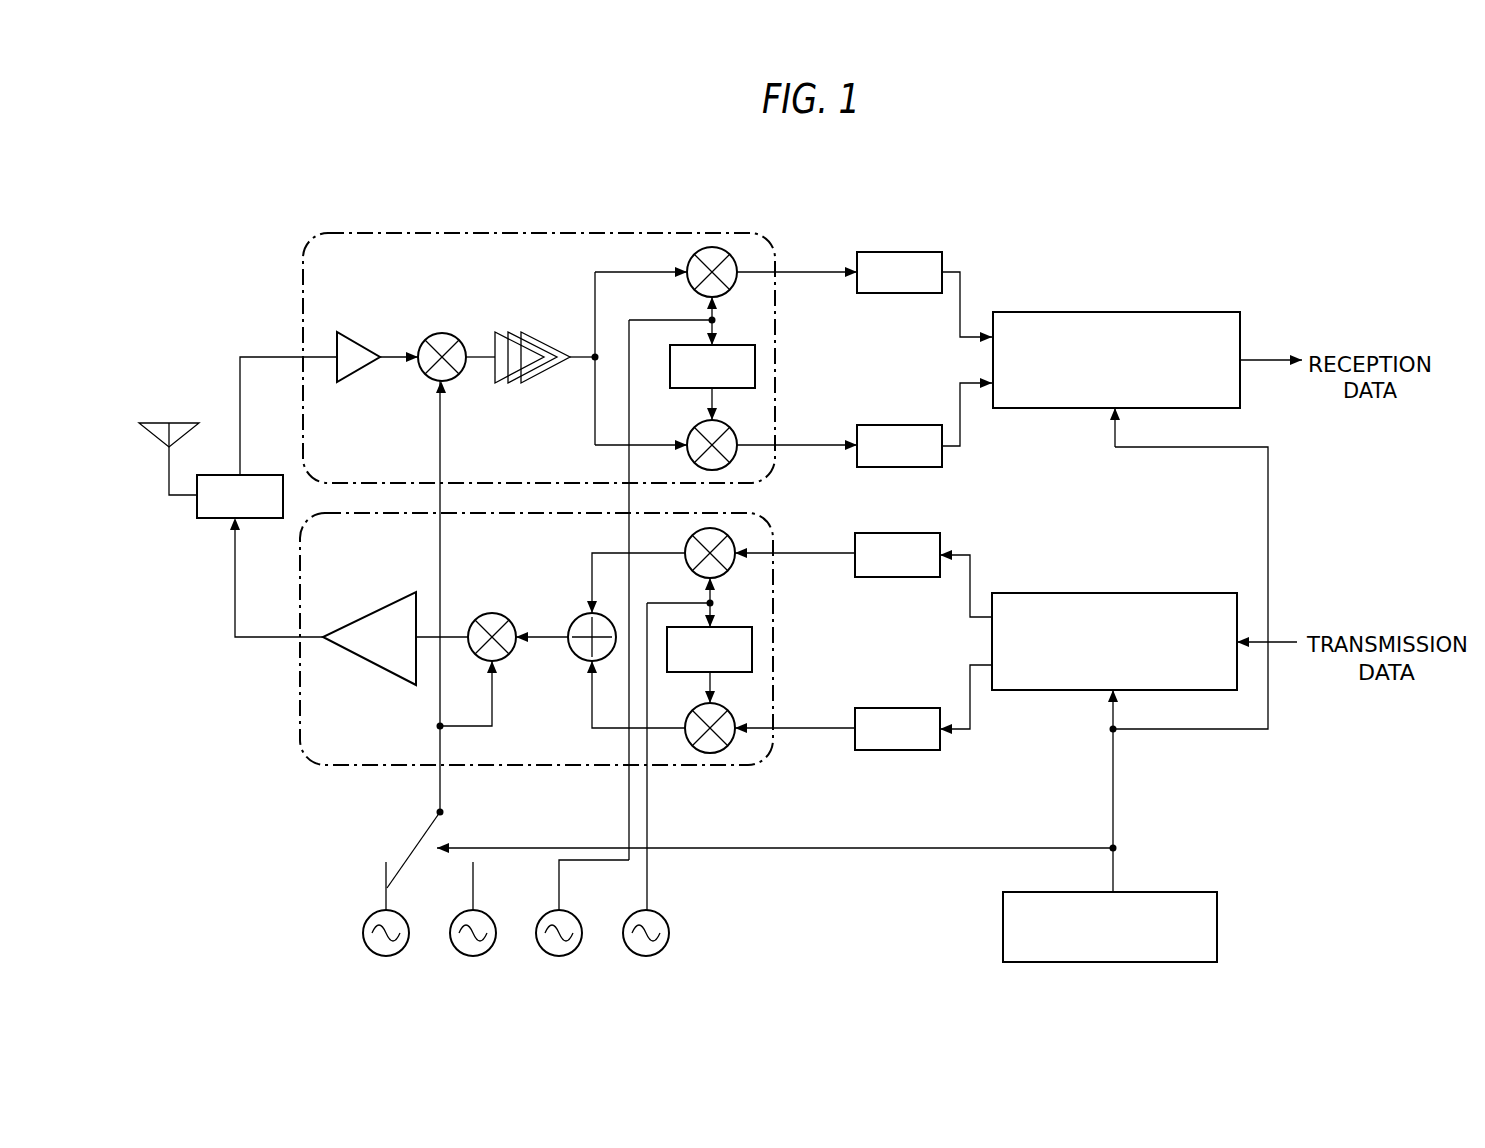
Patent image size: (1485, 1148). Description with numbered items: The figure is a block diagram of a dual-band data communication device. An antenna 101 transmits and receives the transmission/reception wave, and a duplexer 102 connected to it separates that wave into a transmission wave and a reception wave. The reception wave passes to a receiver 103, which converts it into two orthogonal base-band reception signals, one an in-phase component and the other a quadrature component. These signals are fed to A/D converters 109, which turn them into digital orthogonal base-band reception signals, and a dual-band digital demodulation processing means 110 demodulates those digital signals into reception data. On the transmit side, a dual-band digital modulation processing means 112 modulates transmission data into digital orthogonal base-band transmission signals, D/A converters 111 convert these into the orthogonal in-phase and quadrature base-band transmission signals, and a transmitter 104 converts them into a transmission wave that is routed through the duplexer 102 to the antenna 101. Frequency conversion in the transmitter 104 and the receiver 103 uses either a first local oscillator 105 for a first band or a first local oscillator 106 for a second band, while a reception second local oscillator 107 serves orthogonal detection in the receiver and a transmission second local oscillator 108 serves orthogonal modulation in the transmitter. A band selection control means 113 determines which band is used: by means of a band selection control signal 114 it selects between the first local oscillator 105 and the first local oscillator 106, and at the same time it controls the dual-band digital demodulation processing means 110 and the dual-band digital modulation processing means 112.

The antenna 101 is at (180, 423).
The duplexer 102 is at (266, 475).
The receiver 103 is at (353, 232).
The transmitter 104 is at (679, 770).
The first local oscillator for a first band 105 is at (402, 914).
The first local oscillator for a second band 106 is at (489, 914).
The reception second local oscillator 107 is at (575, 914).
The transmission second local oscillator 108 is at (662, 914).
The A/D converters 109 is at (896, 252).
The dual-band digital demodulation processing means 110 is at (1115, 312).
The D/A converters 111 is at (894, 533).
The dual-band digital modulation processing means 112 is at (1113, 592).
The band selection control means 113 is at (1217, 927).
The band selection control signal 114 is at (852, 650).